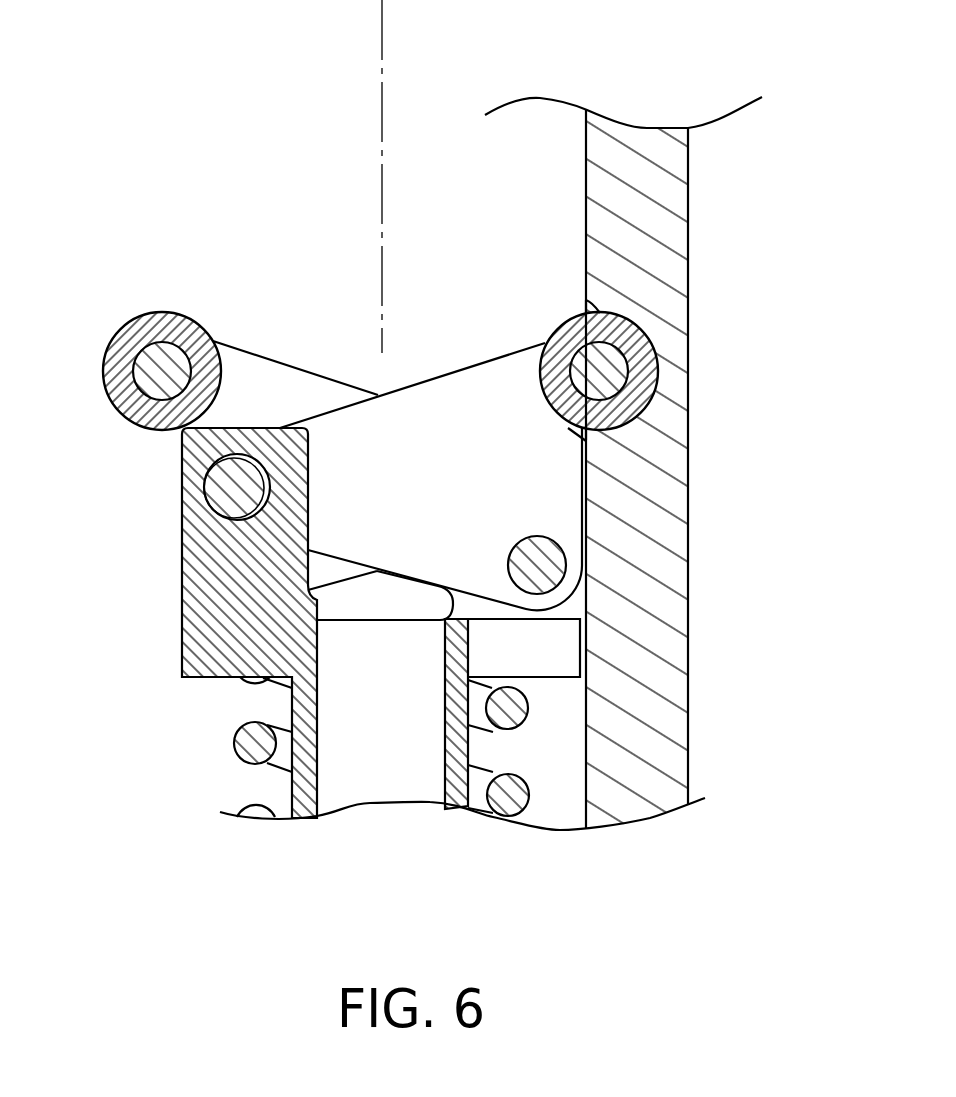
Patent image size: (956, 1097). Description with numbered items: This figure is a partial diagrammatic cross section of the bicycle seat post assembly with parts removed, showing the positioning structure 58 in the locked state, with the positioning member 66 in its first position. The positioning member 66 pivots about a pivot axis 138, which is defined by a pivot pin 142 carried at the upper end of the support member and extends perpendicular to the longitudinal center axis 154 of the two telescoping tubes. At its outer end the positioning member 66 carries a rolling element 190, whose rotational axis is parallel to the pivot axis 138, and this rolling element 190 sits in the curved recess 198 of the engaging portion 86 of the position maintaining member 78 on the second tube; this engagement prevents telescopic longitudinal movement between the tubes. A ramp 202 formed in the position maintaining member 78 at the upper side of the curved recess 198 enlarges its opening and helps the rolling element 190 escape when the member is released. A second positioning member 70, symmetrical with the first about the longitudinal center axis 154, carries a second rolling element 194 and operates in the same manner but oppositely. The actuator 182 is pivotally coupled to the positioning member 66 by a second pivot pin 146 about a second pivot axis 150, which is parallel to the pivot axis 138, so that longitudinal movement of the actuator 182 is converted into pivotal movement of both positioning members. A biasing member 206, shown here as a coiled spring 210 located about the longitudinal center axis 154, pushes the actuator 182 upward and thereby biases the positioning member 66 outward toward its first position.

The positioning structure 58 is at (207, 132).
The positioning member 66 is at (507, 373).
The second positioning member 70 is at (263, 380).
The position maintaining member 78 is at (690, 530).
The engaging portion 86 is at (643, 418).
The pivot axis 138 is at (527, 567).
The pivot pin 142 is at (522, 537).
The second pivot pin 146 is at (237, 487).
The second pivot axis 150 is at (243, 494).
The longitudinal center axis 154 is at (382, 28).
The actuator 182 is at (182, 613).
The rolling element 190 is at (553, 318).
The second rolling element 194 is at (150, 312).
The curved recess 198 is at (658, 365).
The ramp 202 is at (607, 300).
The biasing member 206 is at (245, 742).
The coiled spring 210 is at (510, 800).